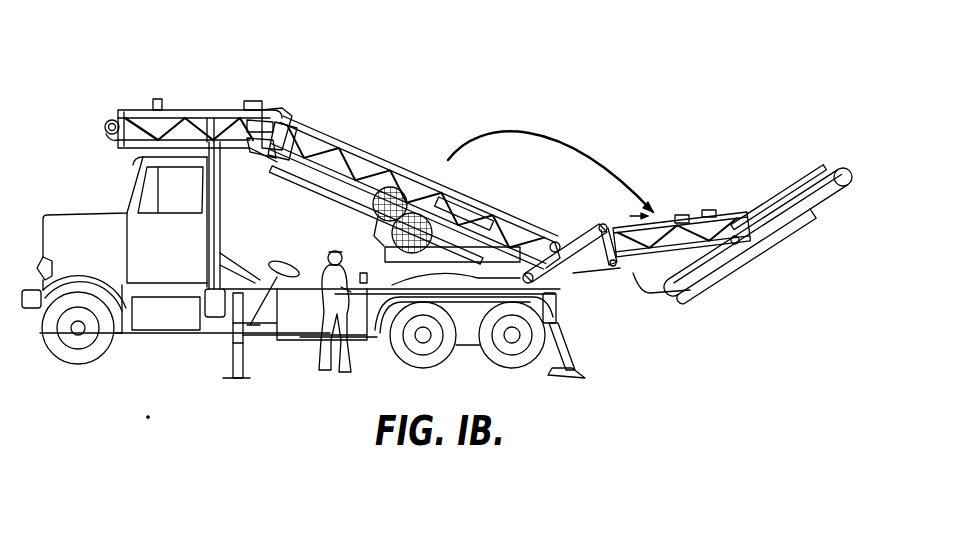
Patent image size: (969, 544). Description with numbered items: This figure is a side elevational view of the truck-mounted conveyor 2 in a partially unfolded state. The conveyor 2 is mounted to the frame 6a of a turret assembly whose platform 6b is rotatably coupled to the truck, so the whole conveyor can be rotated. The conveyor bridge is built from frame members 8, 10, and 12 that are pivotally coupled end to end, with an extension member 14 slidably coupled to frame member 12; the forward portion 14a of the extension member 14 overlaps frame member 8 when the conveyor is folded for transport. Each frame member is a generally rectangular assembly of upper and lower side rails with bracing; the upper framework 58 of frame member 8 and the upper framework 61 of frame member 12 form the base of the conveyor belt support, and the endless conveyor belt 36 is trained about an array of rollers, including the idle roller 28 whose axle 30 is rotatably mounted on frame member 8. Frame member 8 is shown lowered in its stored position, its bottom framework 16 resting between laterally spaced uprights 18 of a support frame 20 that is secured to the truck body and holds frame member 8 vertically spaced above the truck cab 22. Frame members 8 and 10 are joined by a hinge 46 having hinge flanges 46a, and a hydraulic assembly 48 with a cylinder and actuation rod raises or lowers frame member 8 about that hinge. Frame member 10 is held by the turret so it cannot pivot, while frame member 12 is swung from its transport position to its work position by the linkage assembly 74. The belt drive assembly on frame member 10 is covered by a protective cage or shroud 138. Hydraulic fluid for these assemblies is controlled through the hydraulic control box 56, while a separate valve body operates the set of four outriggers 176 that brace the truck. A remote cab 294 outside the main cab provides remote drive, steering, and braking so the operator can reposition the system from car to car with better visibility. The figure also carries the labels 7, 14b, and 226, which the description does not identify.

The conveyor 2 is at (409, 45).
The frame of turret assembly 6a is at (378, 242).
The platform of turret assembly 6b is at (376, 268).
The section line 7 is at (631, 212).
The frame member 8 is at (196, 118).
The frame member 10 is at (364, 147).
The frame member 12 is at (700, 212).
The extension member 14 is at (761, 226).
The forward portion of extension member 14a is at (812, 203).
The lower conveyor rail 14b is at (700, 280).
The bottom framework 16 is at (137, 161).
The uprights 18 is at (215, 120).
The support frame 20 is at (222, 205).
The truck cab 22 is at (102, 251).
The idle roller 28 is at (104, 127).
The axle 30 is at (110, 138).
The endless conveyor belt 36 is at (650, 292).
The hinge 46 is at (272, 100).
The hinge flanges 46a is at (262, 98).
The hydraulic assembly 48 is at (282, 118).
The hydraulic control box 56 is at (365, 340).
The upper framework 58 is at (178, 118).
The upper framework 61 is at (738, 244).
The linkage assembly 74 is at (603, 212).
The protective cage or shroud 138 is at (396, 185).
The outriggers 176 is at (232, 363).
The lift cylinder 226 is at (478, 213).
The remote cab 294 is at (310, 318).